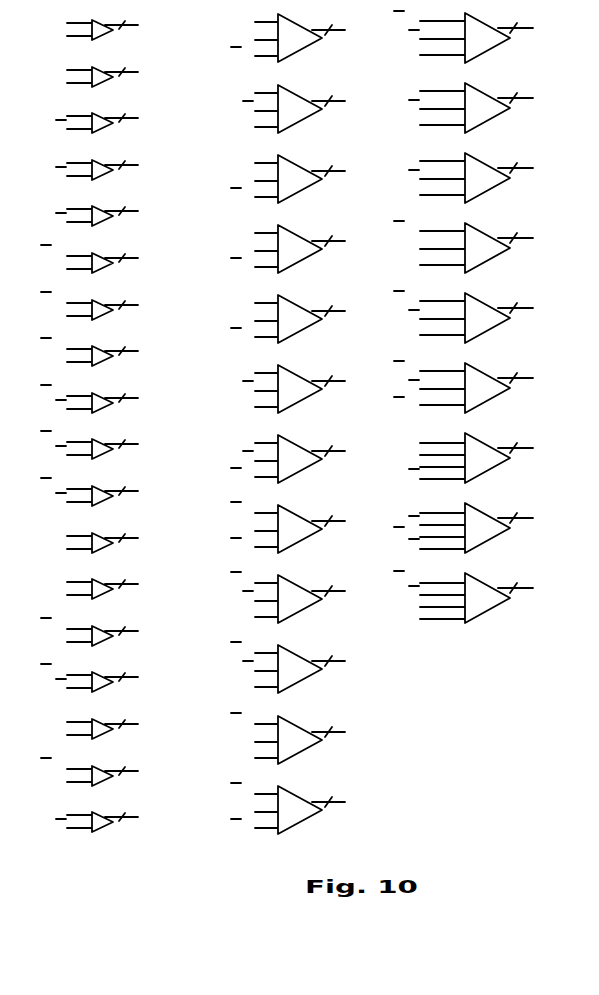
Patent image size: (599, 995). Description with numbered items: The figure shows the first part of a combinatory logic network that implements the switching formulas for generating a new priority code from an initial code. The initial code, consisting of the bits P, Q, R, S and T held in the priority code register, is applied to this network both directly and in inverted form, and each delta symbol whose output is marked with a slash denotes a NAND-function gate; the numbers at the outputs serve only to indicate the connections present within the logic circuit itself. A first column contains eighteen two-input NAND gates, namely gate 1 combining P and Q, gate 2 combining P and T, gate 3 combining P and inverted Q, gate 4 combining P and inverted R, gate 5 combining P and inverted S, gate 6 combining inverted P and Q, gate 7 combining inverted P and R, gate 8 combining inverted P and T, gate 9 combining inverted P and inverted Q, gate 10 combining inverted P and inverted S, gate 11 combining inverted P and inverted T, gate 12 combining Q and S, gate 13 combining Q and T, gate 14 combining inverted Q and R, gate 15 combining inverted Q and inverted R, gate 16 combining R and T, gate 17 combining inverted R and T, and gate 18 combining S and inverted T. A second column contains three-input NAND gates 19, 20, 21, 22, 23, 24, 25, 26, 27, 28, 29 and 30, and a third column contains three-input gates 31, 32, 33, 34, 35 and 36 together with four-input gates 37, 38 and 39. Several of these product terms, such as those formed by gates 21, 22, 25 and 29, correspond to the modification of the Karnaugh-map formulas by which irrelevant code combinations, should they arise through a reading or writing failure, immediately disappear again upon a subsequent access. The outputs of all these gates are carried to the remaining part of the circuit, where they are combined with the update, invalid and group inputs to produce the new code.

The NAND-function gate 1 is at (103, 29).
The NAND-function gate 2 is at (103, 76).
The NAND-function gate 3 is at (103, 122).
The NAND-function gate 4 is at (103, 169).
The NAND-function gate 5 is at (103, 215).
The NAND-function gate 6 is at (103, 262).
The NAND-function gate 7 is at (103, 309).
The NAND-function gate 8 is at (103, 355).
The NAND-function gate 9 is at (103, 402).
The NAND-function gate 10 is at (103, 448).
The NAND-function gate 11 is at (103, 495).
The NAND-function gate 12 is at (103, 542).
The NAND-function gate 13 is at (103, 588).
The NAND-function gate 14 is at (103, 635).
The NAND-function gate 15 is at (103, 681).
The NAND-function gate 16 is at (103, 728).
The NAND-function gate 17 is at (103, 775).
The NAND-function gate 18 is at (103, 821).
The NAND-function gate 19 is at (300, 39).
The NAND-function gate 20 is at (301, 110).
The NAND-function gate 21 is at (301, 180).
The NAND-function gate 22 is at (300, 250).
The NAND-function gate 23 is at (300, 320).
The NAND-function gate 24 is at (300, 390).
The NAND-function gate 25 is at (300, 460).
The NAND-function gate 26 is at (301, 530).
The NAND-function gate 27 is at (301, 600).
The NAND-function gate 28 is at (300, 670).
The NAND-function gate 29 is at (301, 741).
The NAND-function gate 30 is at (300, 811).
The NAND-function gate 31 is at (476, 39).
The NAND-function gate 32 is at (476, 109).
The NAND-function gate 33 is at (476, 179).
The NAND-function gate 34 is at (476, 249).
The NAND-function gate 35 is at (476, 319).
The NAND-function gate 36 is at (476, 389).
The NAND-function gate 37 is at (476, 460).
The NAND-function gate 38 is at (476, 530).
The NAND-function gate 39 is at (476, 600).